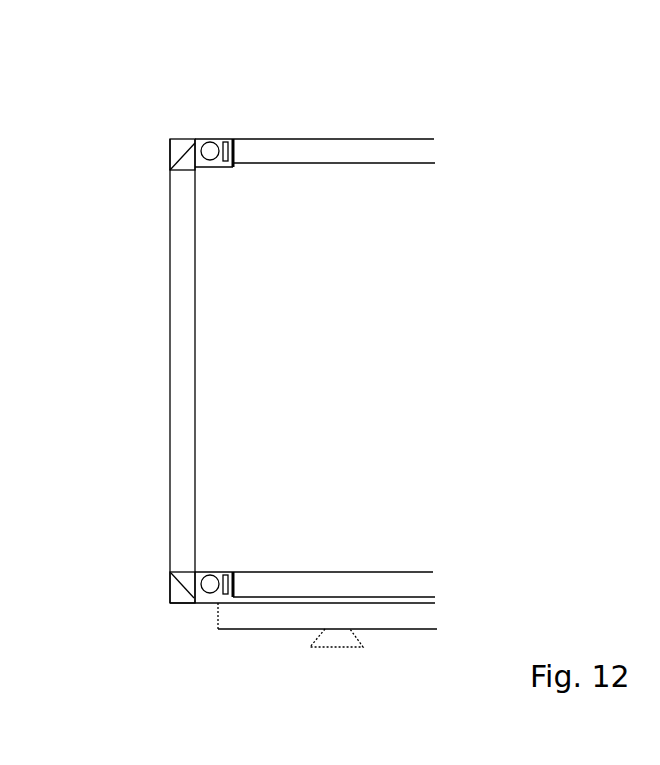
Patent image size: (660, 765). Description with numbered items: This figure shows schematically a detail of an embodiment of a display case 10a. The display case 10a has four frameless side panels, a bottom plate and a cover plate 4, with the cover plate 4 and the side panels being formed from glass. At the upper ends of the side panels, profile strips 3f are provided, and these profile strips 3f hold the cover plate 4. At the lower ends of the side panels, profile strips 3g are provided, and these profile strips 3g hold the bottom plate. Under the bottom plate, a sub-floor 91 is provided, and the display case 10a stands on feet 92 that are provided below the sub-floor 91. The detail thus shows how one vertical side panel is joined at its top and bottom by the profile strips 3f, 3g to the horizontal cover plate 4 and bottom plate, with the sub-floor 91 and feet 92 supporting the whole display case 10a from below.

The profile strip 3f is at (195, 145).
The profile strip 3g is at (173, 595).
The cover plate 4 is at (340, 145).
The sub-floor 91 is at (237, 622).
The feet 92 is at (328, 640).
The display case 10a is at (512, 147).